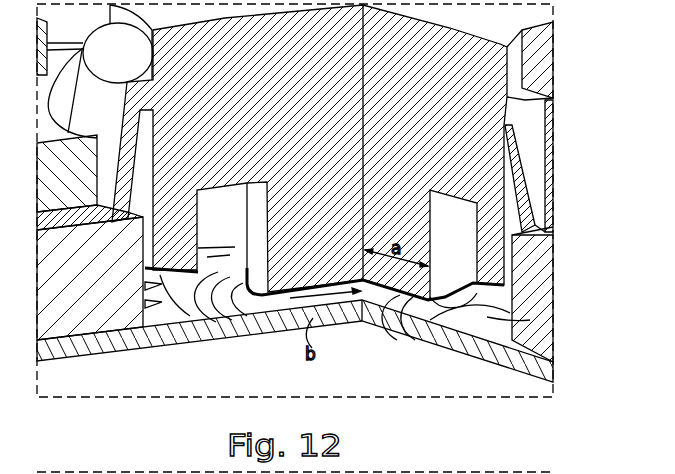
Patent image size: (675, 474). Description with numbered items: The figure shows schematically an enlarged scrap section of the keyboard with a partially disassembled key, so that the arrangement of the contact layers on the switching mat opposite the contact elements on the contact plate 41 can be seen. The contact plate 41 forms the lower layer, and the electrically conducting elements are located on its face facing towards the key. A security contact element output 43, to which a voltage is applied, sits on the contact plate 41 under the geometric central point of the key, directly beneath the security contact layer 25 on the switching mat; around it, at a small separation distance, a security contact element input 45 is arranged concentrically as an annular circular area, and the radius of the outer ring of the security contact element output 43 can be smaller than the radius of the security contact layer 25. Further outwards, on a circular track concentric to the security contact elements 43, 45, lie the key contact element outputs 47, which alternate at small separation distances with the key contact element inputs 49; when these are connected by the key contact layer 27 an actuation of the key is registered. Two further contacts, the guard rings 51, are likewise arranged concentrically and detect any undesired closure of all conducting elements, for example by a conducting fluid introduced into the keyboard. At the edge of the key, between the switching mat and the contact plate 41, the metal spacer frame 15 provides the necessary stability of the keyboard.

The spacer frame 15 is at (535, 296).
The security contact layer 25 is at (405, 323).
The key contact layer 27 is at (184, 306).
The contact plate 41 is at (552, 372).
The security contact element output 43 is at (367, 322).
The security contact element input 45 is at (273, 320).
The key contact element output 47 is at (152, 306).
The key contact element input 49 is at (146, 312).
The guard ring 51 is at (222, 326).